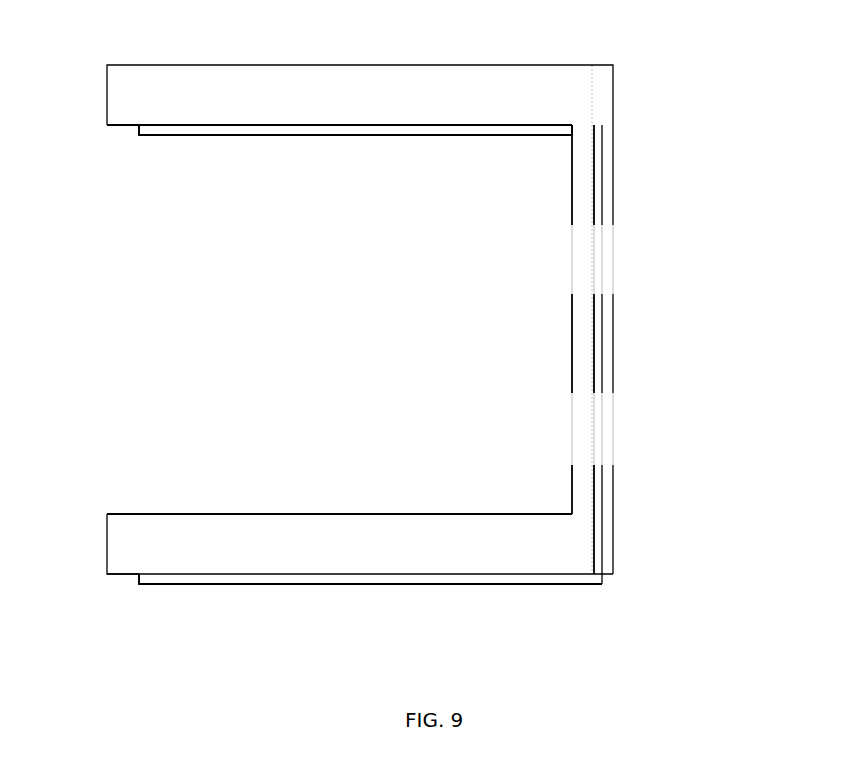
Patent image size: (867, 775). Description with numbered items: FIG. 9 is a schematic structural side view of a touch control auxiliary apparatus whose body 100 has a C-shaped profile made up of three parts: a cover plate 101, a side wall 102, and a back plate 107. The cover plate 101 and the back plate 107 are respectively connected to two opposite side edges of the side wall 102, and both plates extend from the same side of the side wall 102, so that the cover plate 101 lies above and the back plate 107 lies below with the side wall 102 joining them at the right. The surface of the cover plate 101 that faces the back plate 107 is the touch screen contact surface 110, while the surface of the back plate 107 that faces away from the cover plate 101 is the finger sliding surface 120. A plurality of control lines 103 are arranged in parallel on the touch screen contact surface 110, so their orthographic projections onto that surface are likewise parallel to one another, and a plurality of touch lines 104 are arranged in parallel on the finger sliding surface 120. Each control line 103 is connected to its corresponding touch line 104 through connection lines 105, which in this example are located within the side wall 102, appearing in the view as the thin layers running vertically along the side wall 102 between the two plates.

The body 100 is at (430, 370).
The cover plate 101 is at (550, 103).
The side wall 102 is at (579, 323).
The control lines 103 is at (315, 135).
The touch lines 104 is at (238, 580).
The connection lines 105 is at (598, 205).
The back plate 107 is at (548, 540).
The touch screen contact surface 110 is at (114, 127).
The finger sliding surface 120 is at (130, 577).